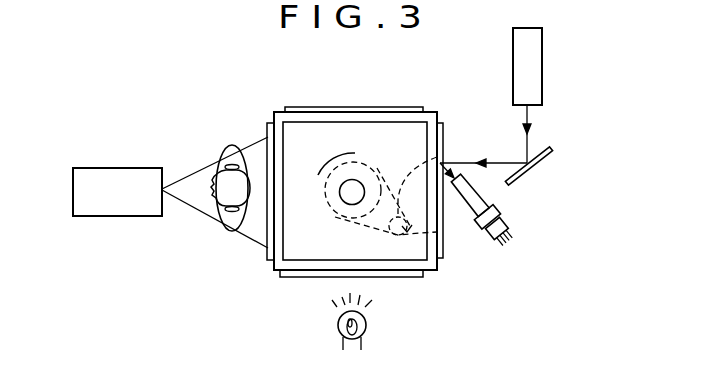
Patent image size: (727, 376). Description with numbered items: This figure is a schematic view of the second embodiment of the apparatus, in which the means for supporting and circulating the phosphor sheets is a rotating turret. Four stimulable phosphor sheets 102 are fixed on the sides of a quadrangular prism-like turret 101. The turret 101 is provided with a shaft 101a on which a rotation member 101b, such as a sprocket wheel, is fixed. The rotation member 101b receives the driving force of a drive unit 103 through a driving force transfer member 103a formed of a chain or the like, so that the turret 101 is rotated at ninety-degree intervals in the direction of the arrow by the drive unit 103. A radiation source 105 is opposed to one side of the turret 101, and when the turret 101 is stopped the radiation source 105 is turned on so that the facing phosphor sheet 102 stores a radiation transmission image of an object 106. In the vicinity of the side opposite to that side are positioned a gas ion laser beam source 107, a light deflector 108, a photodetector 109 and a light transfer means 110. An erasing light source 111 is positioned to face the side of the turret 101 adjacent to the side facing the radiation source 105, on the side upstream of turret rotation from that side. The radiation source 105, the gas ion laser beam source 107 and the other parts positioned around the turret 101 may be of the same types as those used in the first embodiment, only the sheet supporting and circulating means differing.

The turret 101 is at (272, 119).
The shaft 101a is at (348, 192).
The rotation member 101b is at (380, 166).
The stimulable phosphor sheet 102 is at (345, 105).
The drive unit 103 is at (440, 233).
The driving force transfer member 103a is at (441, 163).
The radiation source 105 is at (128, 217).
The object 106 is at (223, 230).
The gas ion laser beam source 107 is at (543, 63).
The light deflector 108 is at (545, 160).
The photodetector 109 is at (498, 218).
The light transfer means 110 is at (478, 198).
The erasing light source 111 is at (365, 327).